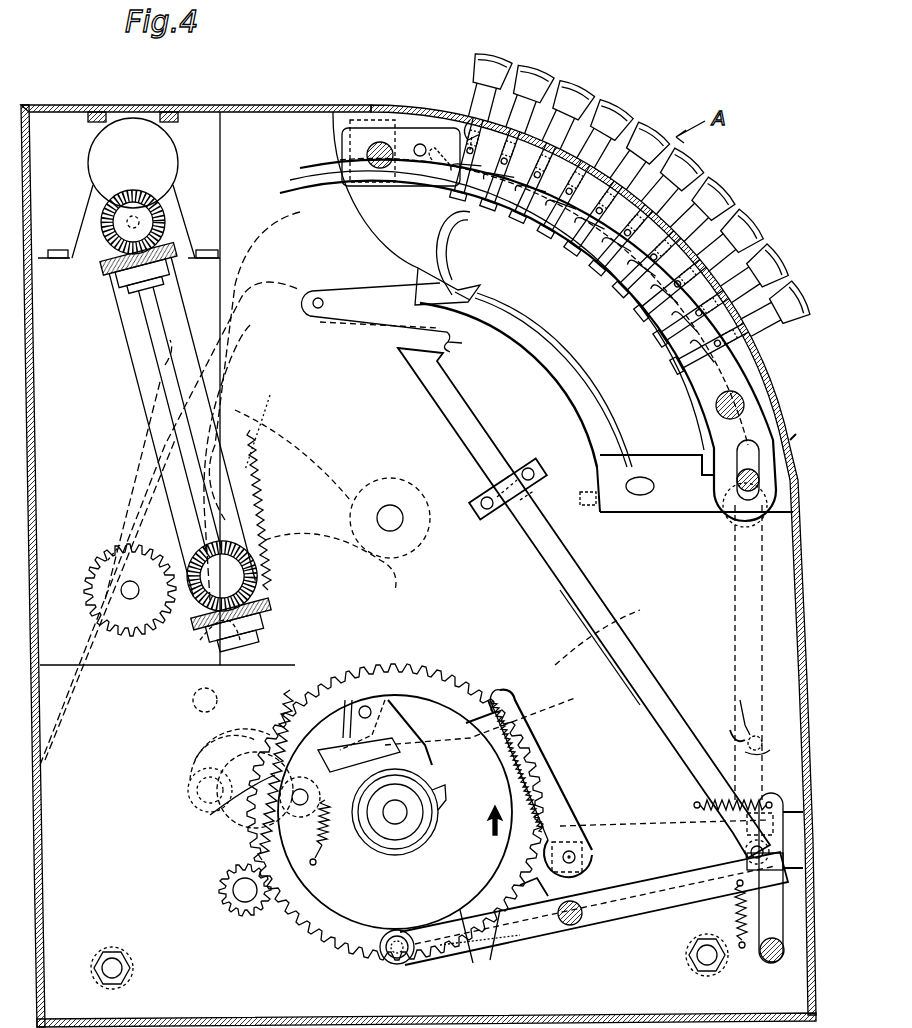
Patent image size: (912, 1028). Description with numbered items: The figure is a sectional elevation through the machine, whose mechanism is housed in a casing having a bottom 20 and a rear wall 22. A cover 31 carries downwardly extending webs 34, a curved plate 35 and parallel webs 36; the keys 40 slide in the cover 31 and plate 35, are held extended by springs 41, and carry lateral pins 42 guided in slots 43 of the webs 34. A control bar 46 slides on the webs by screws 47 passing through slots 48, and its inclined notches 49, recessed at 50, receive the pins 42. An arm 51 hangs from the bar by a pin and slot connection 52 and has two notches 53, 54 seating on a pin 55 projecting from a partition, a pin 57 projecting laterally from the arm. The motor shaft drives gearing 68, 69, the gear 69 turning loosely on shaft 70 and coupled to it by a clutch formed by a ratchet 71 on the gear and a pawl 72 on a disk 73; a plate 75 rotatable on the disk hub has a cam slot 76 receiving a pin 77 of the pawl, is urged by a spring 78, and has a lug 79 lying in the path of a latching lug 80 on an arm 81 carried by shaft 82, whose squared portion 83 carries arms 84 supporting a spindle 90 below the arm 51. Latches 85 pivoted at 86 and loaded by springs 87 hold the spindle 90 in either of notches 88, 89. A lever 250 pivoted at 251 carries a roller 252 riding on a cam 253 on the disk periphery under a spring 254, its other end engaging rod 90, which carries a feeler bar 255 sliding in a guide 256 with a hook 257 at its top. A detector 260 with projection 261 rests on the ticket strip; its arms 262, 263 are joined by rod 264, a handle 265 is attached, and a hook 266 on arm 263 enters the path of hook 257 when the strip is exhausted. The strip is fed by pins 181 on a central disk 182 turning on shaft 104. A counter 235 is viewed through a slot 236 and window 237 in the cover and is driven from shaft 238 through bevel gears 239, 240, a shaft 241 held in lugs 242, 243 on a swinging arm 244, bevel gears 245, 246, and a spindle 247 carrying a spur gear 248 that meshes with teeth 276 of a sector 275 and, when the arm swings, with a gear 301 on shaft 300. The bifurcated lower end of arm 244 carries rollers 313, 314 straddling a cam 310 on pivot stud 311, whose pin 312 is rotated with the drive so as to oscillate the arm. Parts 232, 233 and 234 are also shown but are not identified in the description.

The bottom 20 is at (426, 1014).
The rear wall 22 is at (42, 918).
The cover 31 is at (405, 105).
The webs 34 is at (350, 122).
The plate 35 is at (400, 190).
The parallel webs 36 is at (600, 432).
The keys 40 is at (478, 75).
The springs 41 is at (455, 118).
The pins 42 is at (605, 118).
The slots 43 is at (530, 72).
The control bar 46 is at (395, 130).
The pins or screws 47 is at (782, 375).
The slots 48 is at (365, 158).
The notches 49 is at (429, 163).
The recess 50 is at (455, 188).
The arm 51 is at (735, 565).
The pin and slot connection 52 is at (762, 445).
The notch 53 is at (749, 706).
The notch 54 is at (770, 738).
The pin 55 is at (745, 728).
The pin 57 is at (762, 738).
The gear 68 is at (228, 900).
The gear 69 is at (318, 948).
The shaft 70 is at (390, 825).
The ratchet 71 is at (445, 788).
The pawl 72 is at (363, 705).
The disk 73 is at (418, 700).
The plate 75 is at (395, 700).
The cam slot 76 is at (342, 705).
The pin 77 is at (400, 745).
The spring 78 is at (325, 863).
The lug 79 is at (382, 690).
The latching lug 80 is at (488, 698).
The arm 81 is at (576, 762).
The shaft 82 is at (569, 848).
The squared portion 83 is at (575, 850).
The arms 84 is at (633, 823).
The latches 85 is at (780, 915).
The pivot 86 is at (773, 962).
The springs 87 is at (727, 800).
The notch 88 is at (745, 842).
The notch 89 is at (776, 840).
The spindle 90 is at (750, 852).
The shaft 104 is at (395, 512).
The peripheral pins 181 is at (196, 700).
The central disk 182 is at (565, 675).
The rod 232 is at (738, 510).
The rod 233 is at (795, 590).
The bracket 234 is at (807, 424).
The counter 235 is at (165, 142).
The slot 236 is at (110, 112).
The window 237 is at (105, 128).
The shaft 238 is at (112, 222).
The bevel gear 239 is at (140, 210).
The bevel gear 240 is at (112, 262).
The shaft 241 is at (152, 320).
The lug 242 is at (130, 284).
The lug 243 is at (262, 616).
The arm 244 is at (150, 412).
The bevel gear 245 is at (180, 660).
The bevel gear 246 is at (232, 560).
The spindle 247 is at (250, 580).
The spur gear 248 is at (222, 545).
The lever 250 is at (615, 920).
The pivot 251 is at (568, 926).
The roller 252 is at (395, 965).
The cam 253 is at (480, 947).
The spring 254 is at (742, 948).
The feeler bar 255 is at (655, 710).
The guide 256 is at (505, 520).
The hook 257 is at (445, 365).
The detector 260 is at (475, 288).
The projection 261 is at (465, 288).
The arm 262 is at (490, 298).
The arm 263 is at (405, 320).
The rod 264 is at (316, 312).
The finger grip 265 is at (440, 226).
The hook 266 is at (471, 344).
The sector 275 is at (330, 430).
The teeth 276 is at (262, 418).
The shaft 300 is at (122, 590).
The gear 301 is at (97, 548).
The cam 310 is at (232, 832).
The pivot stud 311 is at (210, 815).
The pin 312 is at (255, 850).
The roller 313 is at (188, 792).
The roller 314 is at (322, 840).